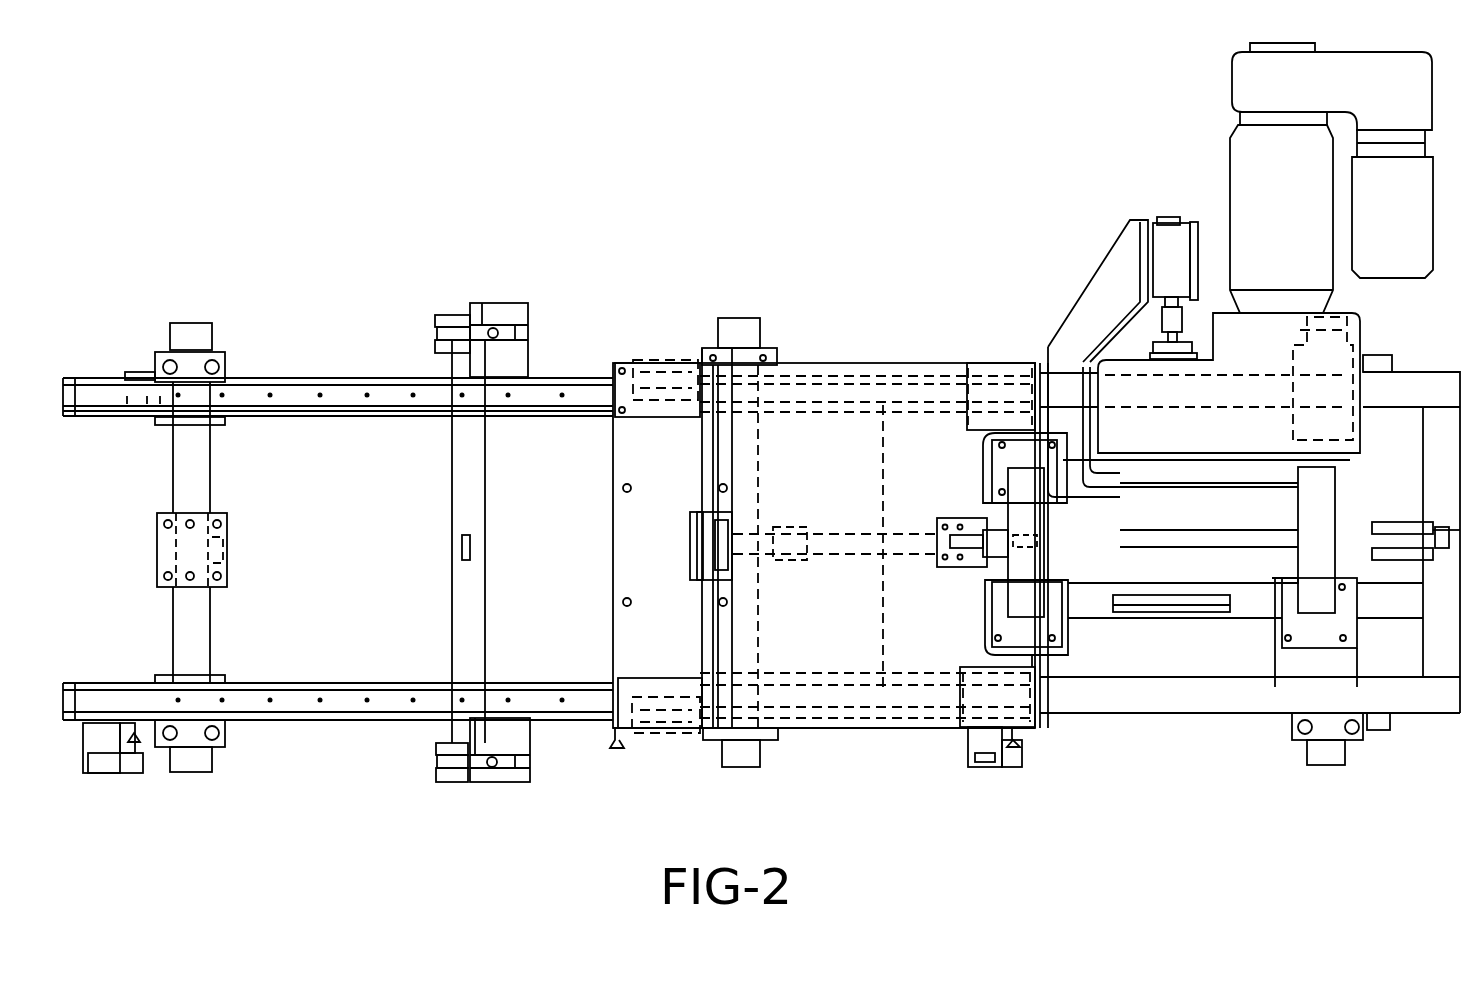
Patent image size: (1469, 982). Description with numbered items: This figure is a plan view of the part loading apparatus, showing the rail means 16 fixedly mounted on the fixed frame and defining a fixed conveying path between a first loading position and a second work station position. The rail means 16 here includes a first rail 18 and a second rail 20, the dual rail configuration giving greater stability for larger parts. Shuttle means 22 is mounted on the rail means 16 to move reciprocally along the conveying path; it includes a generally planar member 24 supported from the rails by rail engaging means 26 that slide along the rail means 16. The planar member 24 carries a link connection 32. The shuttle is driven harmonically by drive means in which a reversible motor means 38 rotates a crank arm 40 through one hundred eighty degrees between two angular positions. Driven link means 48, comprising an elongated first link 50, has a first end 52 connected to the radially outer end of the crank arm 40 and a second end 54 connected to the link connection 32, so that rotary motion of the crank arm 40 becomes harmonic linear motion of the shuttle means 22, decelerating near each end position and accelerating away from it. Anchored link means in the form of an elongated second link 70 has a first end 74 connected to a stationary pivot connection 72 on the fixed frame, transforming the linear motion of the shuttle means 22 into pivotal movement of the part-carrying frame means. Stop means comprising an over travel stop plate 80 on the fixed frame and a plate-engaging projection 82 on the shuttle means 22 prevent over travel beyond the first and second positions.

The rail means 16 is at (265, 378).
The first rail 18 is at (305, 683).
The second rail 20 is at (270, 417).
The shuttle means 22 is at (612, 447).
The planar member 24 is at (612, 608).
The rail engaging means 26 is at (683, 420).
The link connection 32 is at (807, 555).
The motor means 38 is at (1232, 183).
The crank arm 40 is at (1122, 531).
The driven link means 48 is at (875, 523).
The first link 50 is at (858, 565).
The first end 52 is at (1399, 508).
The second end 54 is at (787, 530).
The second link 70 is at (442, 313).
The pivot connection 72 is at (435, 335).
The first end 74 is at (460, 312).
The over travel stop plate 80 is at (223, 545).
The plate-engaging projection 82 is at (688, 545).